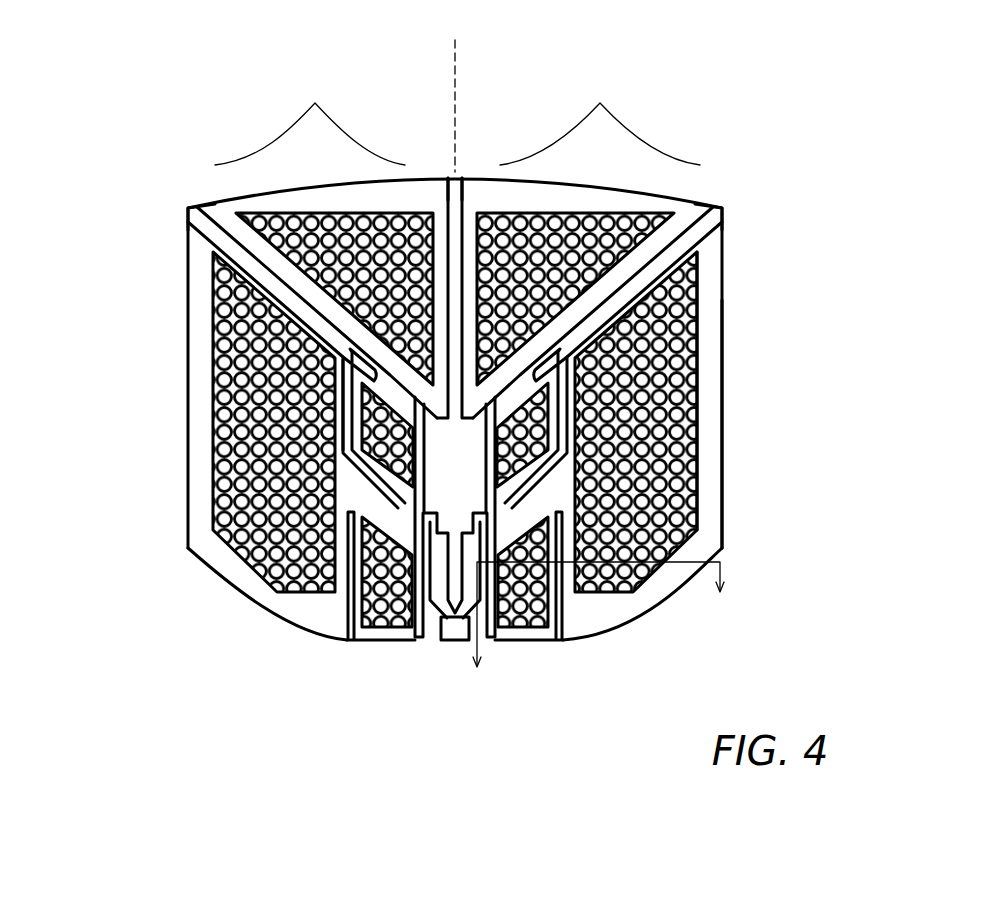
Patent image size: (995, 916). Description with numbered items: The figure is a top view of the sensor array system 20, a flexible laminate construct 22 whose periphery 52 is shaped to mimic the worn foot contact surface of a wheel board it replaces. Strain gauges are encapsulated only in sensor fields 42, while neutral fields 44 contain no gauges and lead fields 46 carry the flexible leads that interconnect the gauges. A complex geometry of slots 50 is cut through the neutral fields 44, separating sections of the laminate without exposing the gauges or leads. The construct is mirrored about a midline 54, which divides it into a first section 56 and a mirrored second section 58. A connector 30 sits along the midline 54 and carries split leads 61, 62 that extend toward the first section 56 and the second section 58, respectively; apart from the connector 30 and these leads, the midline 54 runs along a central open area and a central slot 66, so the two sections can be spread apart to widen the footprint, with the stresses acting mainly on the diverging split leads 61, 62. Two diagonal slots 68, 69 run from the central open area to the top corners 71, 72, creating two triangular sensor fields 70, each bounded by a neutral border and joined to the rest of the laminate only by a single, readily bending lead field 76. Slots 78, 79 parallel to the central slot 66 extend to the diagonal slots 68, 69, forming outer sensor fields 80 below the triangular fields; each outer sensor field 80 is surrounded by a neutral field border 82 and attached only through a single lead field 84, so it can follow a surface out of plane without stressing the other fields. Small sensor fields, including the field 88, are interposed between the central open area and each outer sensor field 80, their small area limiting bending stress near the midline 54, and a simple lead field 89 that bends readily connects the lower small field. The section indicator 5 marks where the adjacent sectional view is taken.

The sensor array system 20 is at (712, 118).
The laminate construct 22 is at (725, 345).
The connector 30 is at (458, 642).
The sensor fields 42 is at (205, 215).
The neutral fields 44 is at (715, 248).
The lead fields 46 is at (362, 478).
The slots 50 is at (355, 602).
The periphery 52 is at (725, 437).
The midline 54 is at (461, 66).
The first section 56 is at (316, 102).
The second section 58 is at (600, 102).
The split lead 61 is at (445, 632).
The split lead 62 is at (487, 625).
The central slot 66 is at (450, 195).
The diagonal slot 68 is at (216, 330).
The diagonal slot 69 is at (702, 300).
The triangular sensor fields 70 is at (446, 225).
The top corner 71 is at (192, 205).
The top corner 72 is at (715, 205).
The lead field 76 is at (527, 376).
The slot 78 is at (360, 407).
The slot 79 is at (566, 435).
The outer sensor fields 80 is at (680, 525).
The neutral field border 82 is at (642, 599).
The lead field 84 is at (540, 522).
The small sensor field 88 is at (350, 610).
The lead field 89 is at (378, 618).
The section line 5- 5 is at (598, 628).